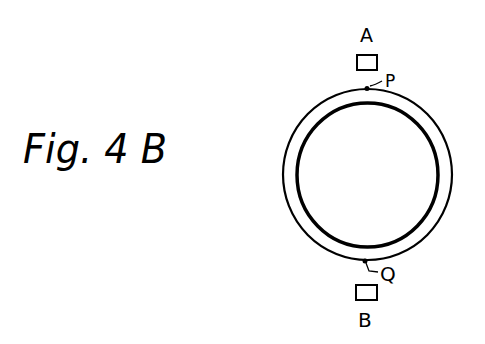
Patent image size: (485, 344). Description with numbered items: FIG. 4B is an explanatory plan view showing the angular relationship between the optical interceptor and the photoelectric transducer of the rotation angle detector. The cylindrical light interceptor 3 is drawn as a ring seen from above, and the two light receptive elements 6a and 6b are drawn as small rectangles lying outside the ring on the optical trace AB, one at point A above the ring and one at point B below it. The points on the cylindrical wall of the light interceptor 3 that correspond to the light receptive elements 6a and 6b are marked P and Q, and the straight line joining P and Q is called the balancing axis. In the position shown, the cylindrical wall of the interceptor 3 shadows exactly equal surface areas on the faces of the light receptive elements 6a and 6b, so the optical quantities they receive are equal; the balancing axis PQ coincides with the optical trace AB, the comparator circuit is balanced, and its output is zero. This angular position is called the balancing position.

The cylindrical light interceptor 3 is at (443, 162).
The light receptive element 6a is at (377, 63).
The light receptive element 6b is at (377, 292).